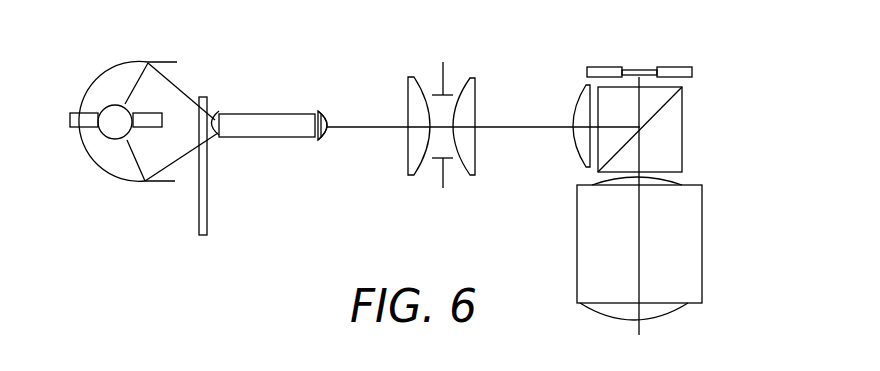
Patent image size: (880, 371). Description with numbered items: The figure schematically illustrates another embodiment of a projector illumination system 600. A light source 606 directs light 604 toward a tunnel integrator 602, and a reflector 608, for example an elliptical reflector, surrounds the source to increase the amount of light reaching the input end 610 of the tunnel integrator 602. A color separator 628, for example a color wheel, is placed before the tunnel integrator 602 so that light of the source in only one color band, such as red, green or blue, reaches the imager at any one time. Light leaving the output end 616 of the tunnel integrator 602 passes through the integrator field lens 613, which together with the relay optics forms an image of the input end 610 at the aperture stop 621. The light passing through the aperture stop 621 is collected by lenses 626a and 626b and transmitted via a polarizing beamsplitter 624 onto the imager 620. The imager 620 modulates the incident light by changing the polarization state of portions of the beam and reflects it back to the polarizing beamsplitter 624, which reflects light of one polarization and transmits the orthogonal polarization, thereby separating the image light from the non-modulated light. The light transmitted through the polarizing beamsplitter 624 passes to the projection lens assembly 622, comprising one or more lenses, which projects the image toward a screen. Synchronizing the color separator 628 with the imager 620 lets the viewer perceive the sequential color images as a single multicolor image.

The projector illumination system 600 is at (720, 78).
The tunnel integrator 602 is at (260, 113).
The light 604 is at (187, 154).
The light source 606 is at (109, 106).
The reflector 608 is at (107, 167).
The input end 610 is at (214, 110).
The integrator field lens 613 is at (324, 140).
The output end 616 is at (320, 111).
The imager 620 is at (668, 67).
The aperture stop 621 is at (440, 170).
The projection lens assembly 622 is at (702, 257).
The polarizing beamsplitter 624 is at (682, 132).
The lens 626a is at (473, 80).
The lens 626b is at (583, 92).
The color separator 628 is at (207, 213).